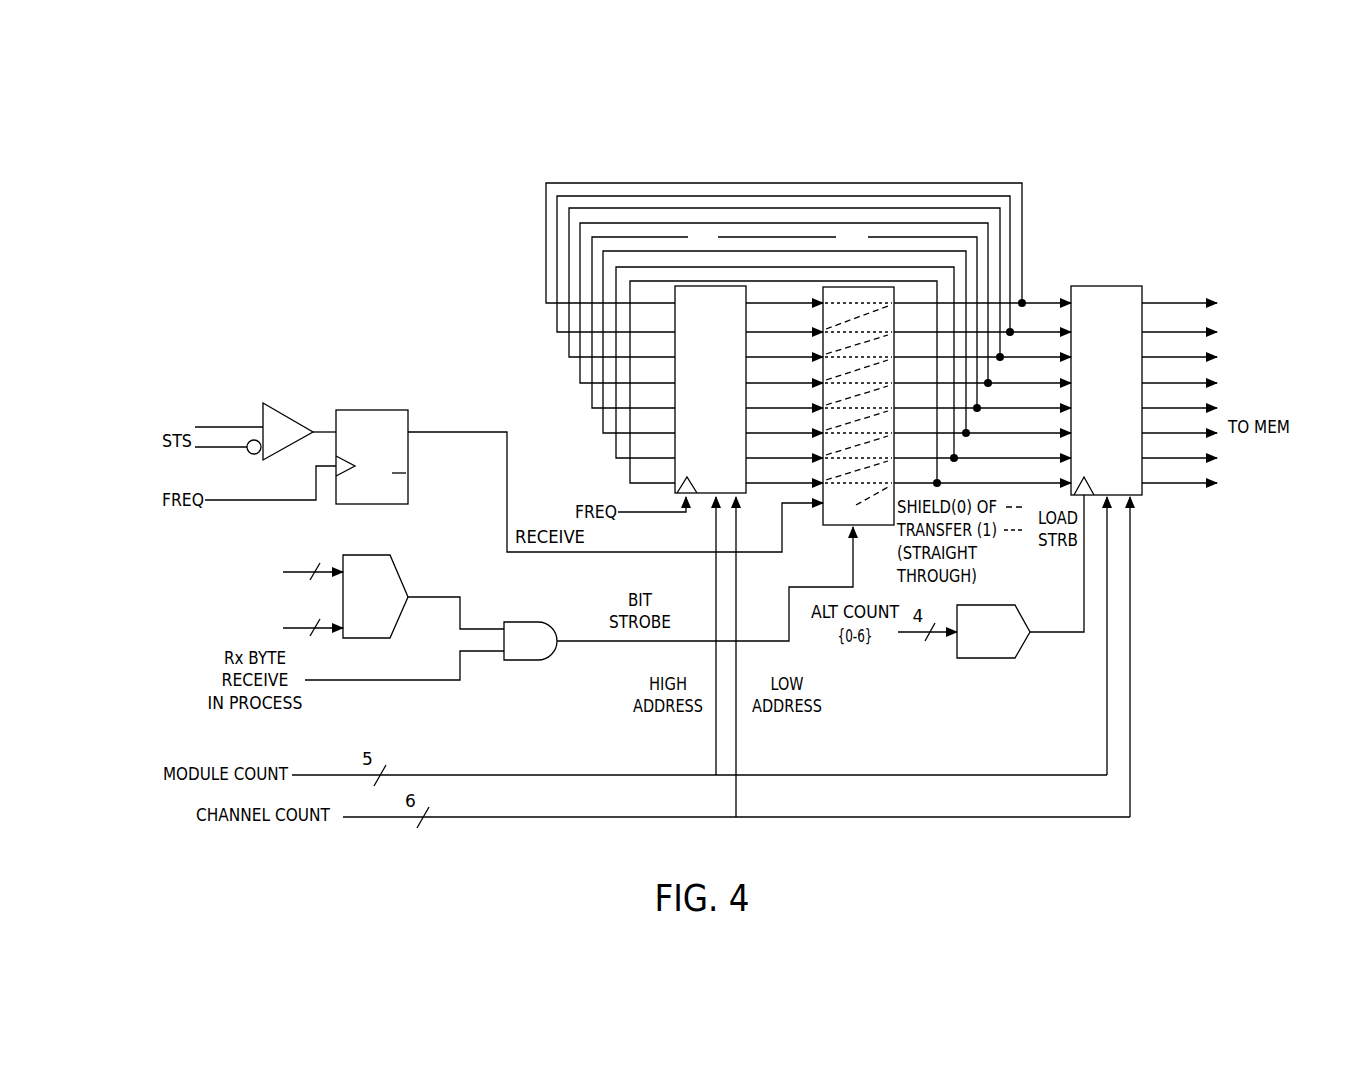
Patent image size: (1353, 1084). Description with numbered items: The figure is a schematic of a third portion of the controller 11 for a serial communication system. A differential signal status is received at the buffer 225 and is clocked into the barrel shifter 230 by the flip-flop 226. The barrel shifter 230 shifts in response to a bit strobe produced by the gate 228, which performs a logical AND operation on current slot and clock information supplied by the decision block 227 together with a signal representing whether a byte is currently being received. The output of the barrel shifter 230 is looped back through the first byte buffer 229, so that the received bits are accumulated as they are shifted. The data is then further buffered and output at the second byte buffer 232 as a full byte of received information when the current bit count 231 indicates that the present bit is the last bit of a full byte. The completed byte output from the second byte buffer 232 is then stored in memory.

The controller 11 is at (1152, 153).
The buffer 225 is at (265, 405).
The flip-flop 226 is at (390, 410).
The decision block 227 is at (364, 555).
The gate 228 is at (528, 622).
The first byte buffer 229 is at (712, 286).
The barrel shifter 230 is at (862, 287).
The current bit count 231 is at (1022, 612).
The second byte buffer 232 is at (1112, 285).